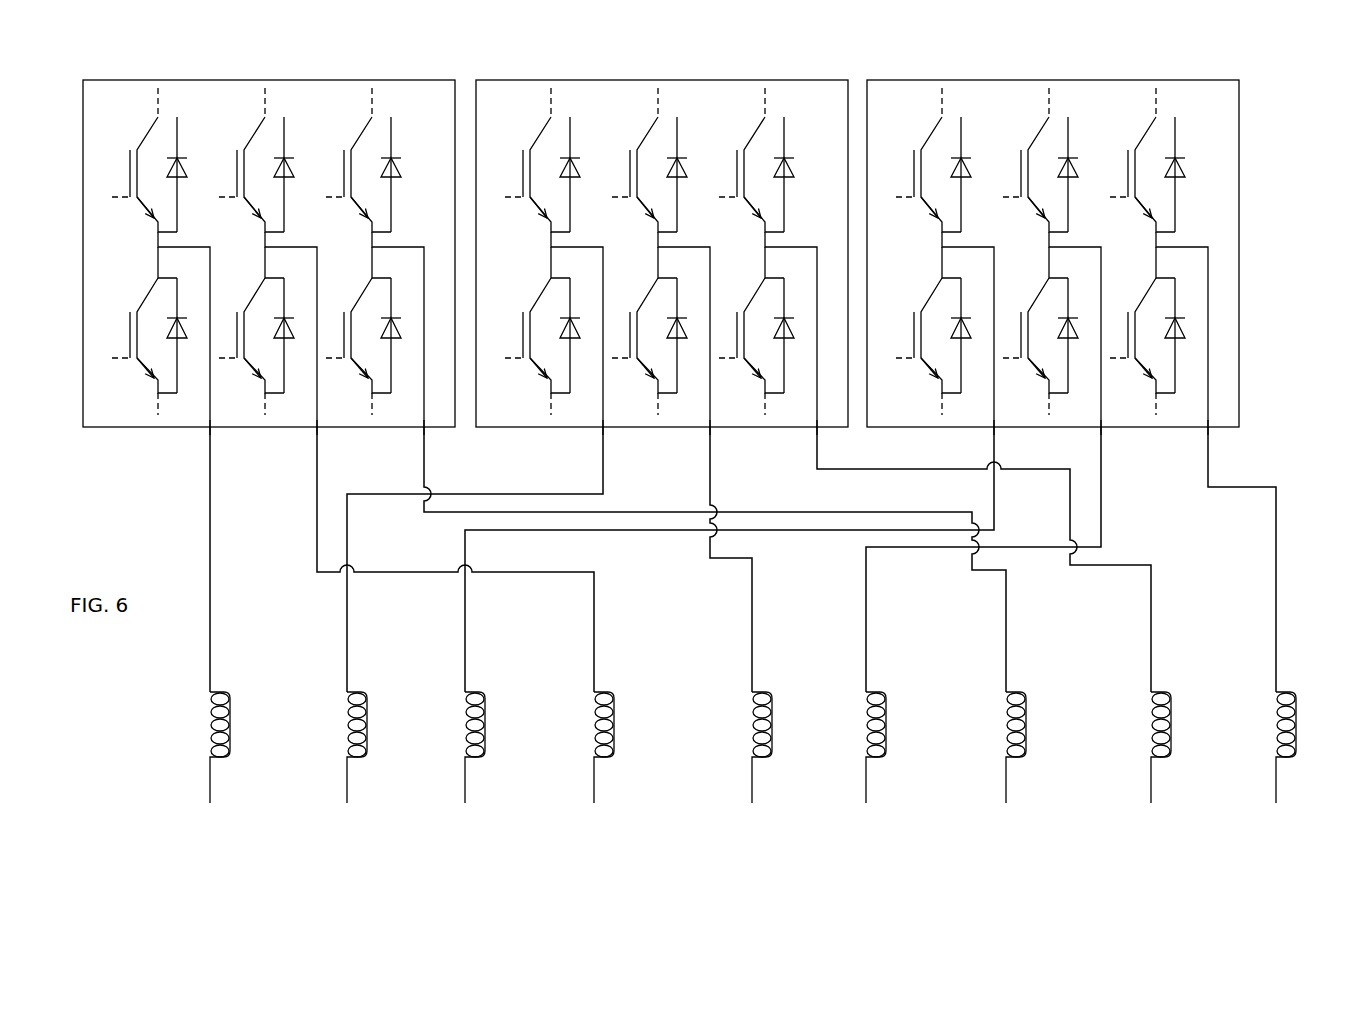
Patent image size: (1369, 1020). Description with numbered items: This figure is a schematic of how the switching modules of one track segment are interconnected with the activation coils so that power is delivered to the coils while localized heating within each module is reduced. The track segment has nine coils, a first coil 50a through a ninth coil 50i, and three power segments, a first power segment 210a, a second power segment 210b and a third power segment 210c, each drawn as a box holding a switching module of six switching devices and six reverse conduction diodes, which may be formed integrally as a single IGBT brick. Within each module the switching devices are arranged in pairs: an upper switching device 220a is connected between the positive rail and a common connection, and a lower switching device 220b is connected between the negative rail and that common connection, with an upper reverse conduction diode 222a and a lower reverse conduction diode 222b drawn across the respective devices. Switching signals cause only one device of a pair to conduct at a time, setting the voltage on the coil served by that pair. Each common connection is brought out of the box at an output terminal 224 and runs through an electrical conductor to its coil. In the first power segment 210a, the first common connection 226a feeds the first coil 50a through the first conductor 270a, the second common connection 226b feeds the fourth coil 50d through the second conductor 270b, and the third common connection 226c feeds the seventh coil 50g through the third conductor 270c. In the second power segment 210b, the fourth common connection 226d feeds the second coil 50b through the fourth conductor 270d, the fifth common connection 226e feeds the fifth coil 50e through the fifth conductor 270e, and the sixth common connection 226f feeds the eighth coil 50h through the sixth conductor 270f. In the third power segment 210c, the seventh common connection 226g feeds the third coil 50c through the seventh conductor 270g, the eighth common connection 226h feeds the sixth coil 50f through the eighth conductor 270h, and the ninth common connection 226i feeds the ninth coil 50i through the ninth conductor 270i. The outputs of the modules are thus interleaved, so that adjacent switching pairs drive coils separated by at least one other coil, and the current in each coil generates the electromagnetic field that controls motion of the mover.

The first power segment 210a is at (270, 80).
The second power segment 210b is at (675, 80).
The third power segment 210c is at (1065, 80).
The upper switching device 220a is at (127, 148).
The lower switching device 220b is at (133, 308).
The upper freewheeling diode 222a is at (193, 169).
The lower freewheeling diode 222b is at (188, 348).
The inverter output terminal 224 is at (210, 428).
The first common connection 226a is at (168, 247).
The second common connection 226b is at (275, 247).
The third common connection 226c is at (380, 247).
The fourth common connection 226d is at (561, 247).
The fifth common connection 226e is at (668, 247).
The sixth common connection 226f is at (773, 247).
The seventh common connection 226g is at (952, 247).
The eighth common connection 226h is at (1059, 247).
The ninth common connection 226i is at (1164, 247).
The first conductor 270a is at (210, 468).
The second conductor 270b is at (317, 468).
The third conductor 270c is at (424, 468).
The fourth conductor 270d is at (603, 468).
The fifth conductor 270e is at (710, 468).
The sixth conductor 270f is at (817, 468).
The seventh conductor 270g is at (992, 467).
The eighth conductor 270h is at (1103, 463).
The ninth conductor 270i is at (1208, 468).
The first coil 50a is at (240, 747).
The second coil 50b is at (377, 747).
The third coil 50c is at (495, 747).
The fourth coil 50d is at (624, 747).
The fifth coil 50e is at (782, 747).
The sixth coil 50f is at (896, 747).
The seventh coil 50g is at (1036, 747).
The eighth coil 50h is at (1181, 747).
The ninth coil 50i is at (1306, 747).